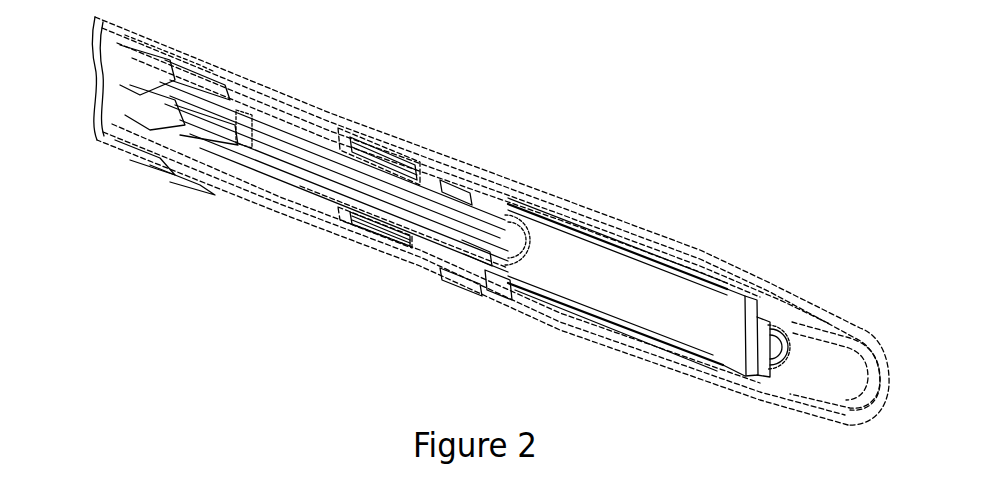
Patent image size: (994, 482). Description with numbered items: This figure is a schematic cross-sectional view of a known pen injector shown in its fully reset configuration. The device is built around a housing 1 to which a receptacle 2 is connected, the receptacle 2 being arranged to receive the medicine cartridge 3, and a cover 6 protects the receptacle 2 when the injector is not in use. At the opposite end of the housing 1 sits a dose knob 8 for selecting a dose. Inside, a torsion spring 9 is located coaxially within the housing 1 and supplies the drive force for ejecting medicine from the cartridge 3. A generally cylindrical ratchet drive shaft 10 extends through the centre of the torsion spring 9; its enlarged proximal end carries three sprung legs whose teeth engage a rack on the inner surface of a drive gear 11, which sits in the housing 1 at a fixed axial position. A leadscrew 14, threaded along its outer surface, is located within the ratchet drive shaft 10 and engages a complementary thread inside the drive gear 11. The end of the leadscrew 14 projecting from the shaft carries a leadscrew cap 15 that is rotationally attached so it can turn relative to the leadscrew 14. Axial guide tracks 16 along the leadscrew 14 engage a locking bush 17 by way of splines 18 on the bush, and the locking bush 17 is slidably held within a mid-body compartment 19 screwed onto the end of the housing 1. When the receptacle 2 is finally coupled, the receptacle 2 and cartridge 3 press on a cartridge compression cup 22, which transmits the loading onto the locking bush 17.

The housing 1 is at (360, 130).
The receptacle 2 is at (657, 257).
The medicine cartridge 3 is at (545, 222).
The cover 6 is at (770, 287).
The dose knob 8 is at (107, 92).
The torsion spring 9 is at (264, 110).
The ratchet drive shaft 10 is at (260, 167).
The drive gear 11 is at (427, 230).
The leadscrew 14 is at (327, 168).
The leadscrew cap 15 is at (502, 262).
The axial guide tracks 16 is at (383, 203).
The locking bush 17 is at (466, 205).
The splines 18 is at (500, 310).
The mid-body compartment 19 is at (460, 285).
The cartridge compression cup 22 is at (497, 275).